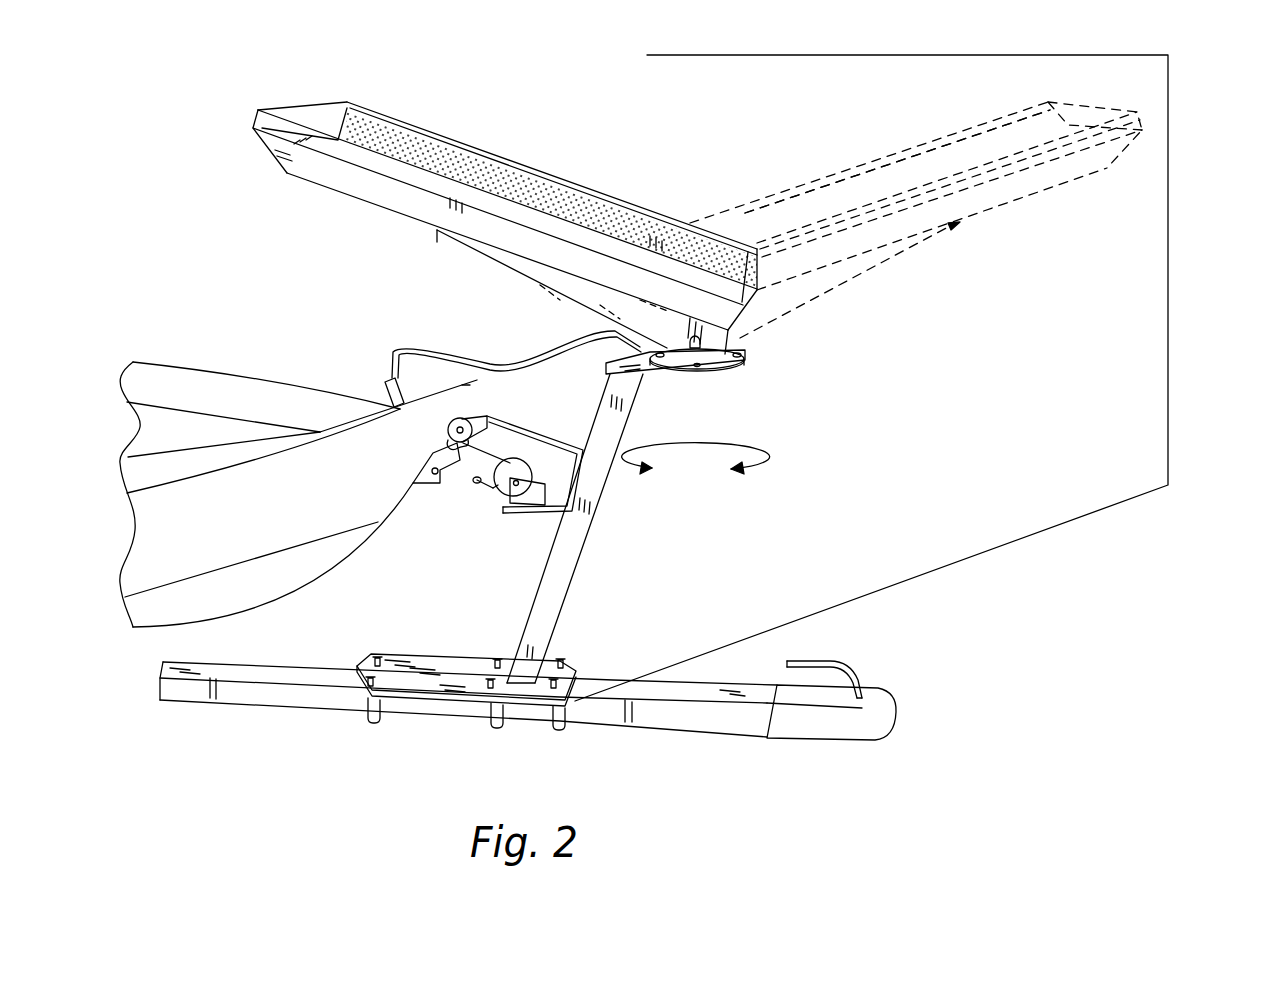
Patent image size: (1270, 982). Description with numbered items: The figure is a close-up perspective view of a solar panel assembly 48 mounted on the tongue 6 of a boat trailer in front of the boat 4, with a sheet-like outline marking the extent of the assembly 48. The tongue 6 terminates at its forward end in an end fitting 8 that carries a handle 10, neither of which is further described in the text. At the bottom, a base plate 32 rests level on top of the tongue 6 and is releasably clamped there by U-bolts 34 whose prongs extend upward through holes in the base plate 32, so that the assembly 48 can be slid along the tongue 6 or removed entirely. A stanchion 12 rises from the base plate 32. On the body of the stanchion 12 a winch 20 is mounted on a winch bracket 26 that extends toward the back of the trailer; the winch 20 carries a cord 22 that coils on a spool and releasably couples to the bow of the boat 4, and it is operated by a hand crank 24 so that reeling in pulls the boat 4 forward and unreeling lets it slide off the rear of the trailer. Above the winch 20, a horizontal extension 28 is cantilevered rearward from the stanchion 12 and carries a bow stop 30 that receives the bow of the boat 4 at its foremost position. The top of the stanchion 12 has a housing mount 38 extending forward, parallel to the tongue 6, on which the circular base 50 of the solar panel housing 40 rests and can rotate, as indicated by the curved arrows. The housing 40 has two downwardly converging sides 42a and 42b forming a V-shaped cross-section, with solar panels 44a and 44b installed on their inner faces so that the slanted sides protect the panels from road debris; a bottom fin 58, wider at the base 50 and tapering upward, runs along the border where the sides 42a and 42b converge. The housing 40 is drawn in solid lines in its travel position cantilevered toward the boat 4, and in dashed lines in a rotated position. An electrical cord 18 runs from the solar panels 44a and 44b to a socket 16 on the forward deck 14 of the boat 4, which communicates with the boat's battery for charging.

The boat 4 is at (357, 562).
The tongue 6 is at (610, 723).
The rail end cap 8 is at (885, 737).
The handle 10 is at (857, 672).
The stanchion 12 is at (563, 607).
The forward deck 14 is at (422, 395).
The socket 16 is at (401, 410).
The electrical cord 18 is at (392, 348).
The winch 20 is at (548, 470).
The cord 22 is at (457, 467).
The hand crank 24 is at (483, 490).
The winch bracket 26 is at (578, 536).
The horizontal extension 28 is at (535, 430).
The bow stop 30 is at (478, 425).
The base plate 32 is at (467, 658).
The U-bolt 34 is at (370, 722).
The housing mount 38 is at (675, 378).
The solar panel housing 40 is at (505, 194).
The left side 42a is at (348, 186).
The right side 42b is at (1017, 202).
The right solar panel 44a is at (867, 172).
The left solar panel 44b is at (385, 128).
The solar panel assembly 48 is at (1168, 283).
The base 50 is at (745, 355).
The bottom fin 58 is at (505, 270).